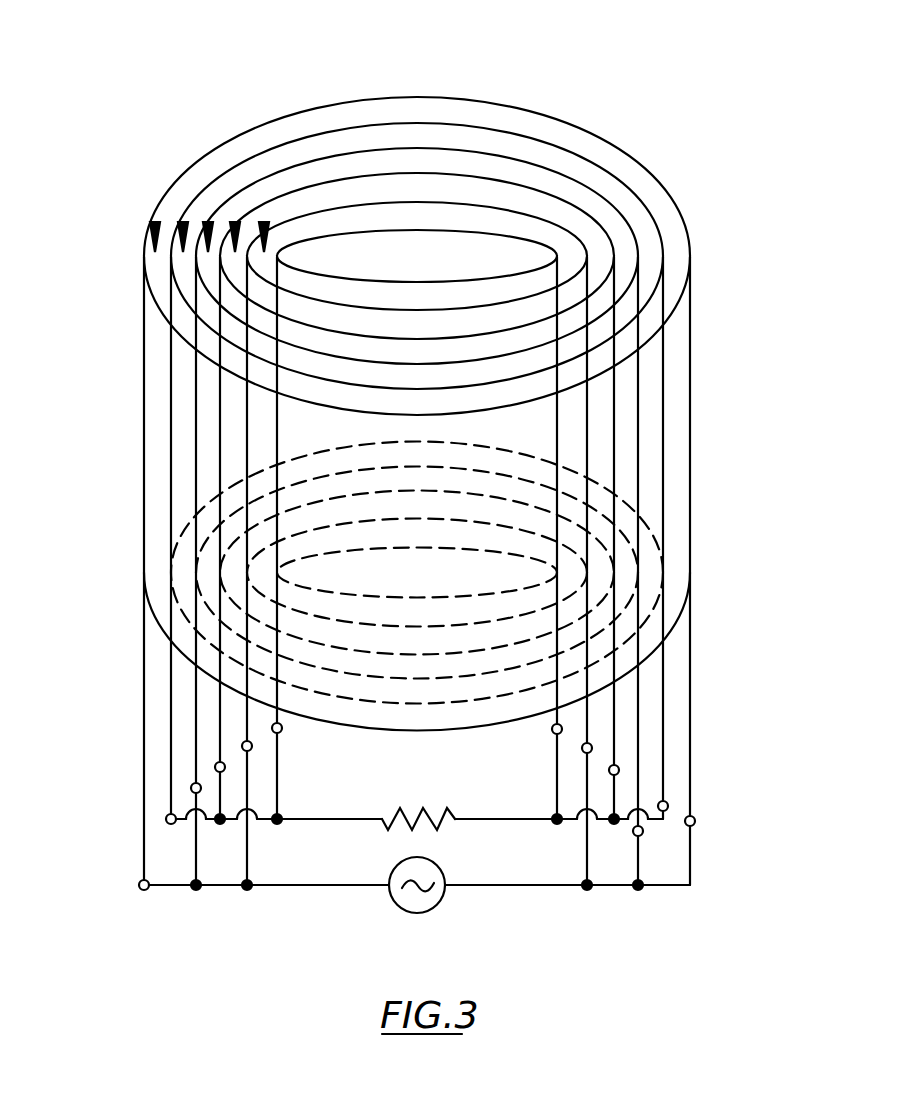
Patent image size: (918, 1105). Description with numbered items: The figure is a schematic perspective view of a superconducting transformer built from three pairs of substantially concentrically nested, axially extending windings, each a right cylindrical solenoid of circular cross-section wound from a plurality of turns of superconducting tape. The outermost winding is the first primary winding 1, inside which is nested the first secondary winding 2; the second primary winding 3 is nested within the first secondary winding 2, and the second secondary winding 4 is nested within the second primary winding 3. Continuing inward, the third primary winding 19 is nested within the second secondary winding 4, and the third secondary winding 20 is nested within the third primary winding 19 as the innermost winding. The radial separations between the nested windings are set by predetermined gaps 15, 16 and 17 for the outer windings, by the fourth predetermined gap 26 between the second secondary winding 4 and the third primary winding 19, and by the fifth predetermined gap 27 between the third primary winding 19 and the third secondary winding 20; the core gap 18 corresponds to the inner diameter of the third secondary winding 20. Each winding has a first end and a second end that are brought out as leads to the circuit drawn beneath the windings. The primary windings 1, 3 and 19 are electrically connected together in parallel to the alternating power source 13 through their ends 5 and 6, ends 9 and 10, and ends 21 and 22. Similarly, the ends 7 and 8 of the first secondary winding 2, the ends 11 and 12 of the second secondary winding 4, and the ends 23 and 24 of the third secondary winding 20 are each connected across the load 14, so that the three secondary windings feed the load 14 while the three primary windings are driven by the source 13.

The first primary winding 1 is at (637, 160).
The first secondary winding 2 is at (575, 153).
The second primary winding 3 is at (527, 163).
The second secondary winding 4 is at (478, 175).
The first end of winding 1 5 is at (144, 800).
The second end of winding 1 6 is at (690, 804).
The first end of winding 2 7 is at (171, 750).
The second end of winding 2 8 is at (663, 755).
The first end of winding 3 9 is at (196, 728).
The second end of winding 3 10 is at (638, 730).
The first end of winding 4 11 is at (220, 705).
The second end of winding 4 12 is at (614, 707).
The alternating power source 13 is at (393, 868).
The load 14 is at (440, 825).
The predetermined gap 15 is at (155, 224).
The predetermined gap 16 is at (183, 224).
The predetermined gap 17 is at (208, 224).
The core gap 18 is at (317, 252).
The third primary winding 19 is at (420, 200).
The third secondary winding 20 is at (367, 230).
The first end of winding 19 21 is at (248, 778).
The second end of winding 19 22 is at (582, 780).
The first end of winding 20 23 is at (281, 733).
The second end of winding 20 24 is at (553, 735).
The fourth predetermined gap 26 is at (235, 224).
The fifth predetermined gap 27 is at (264, 224).